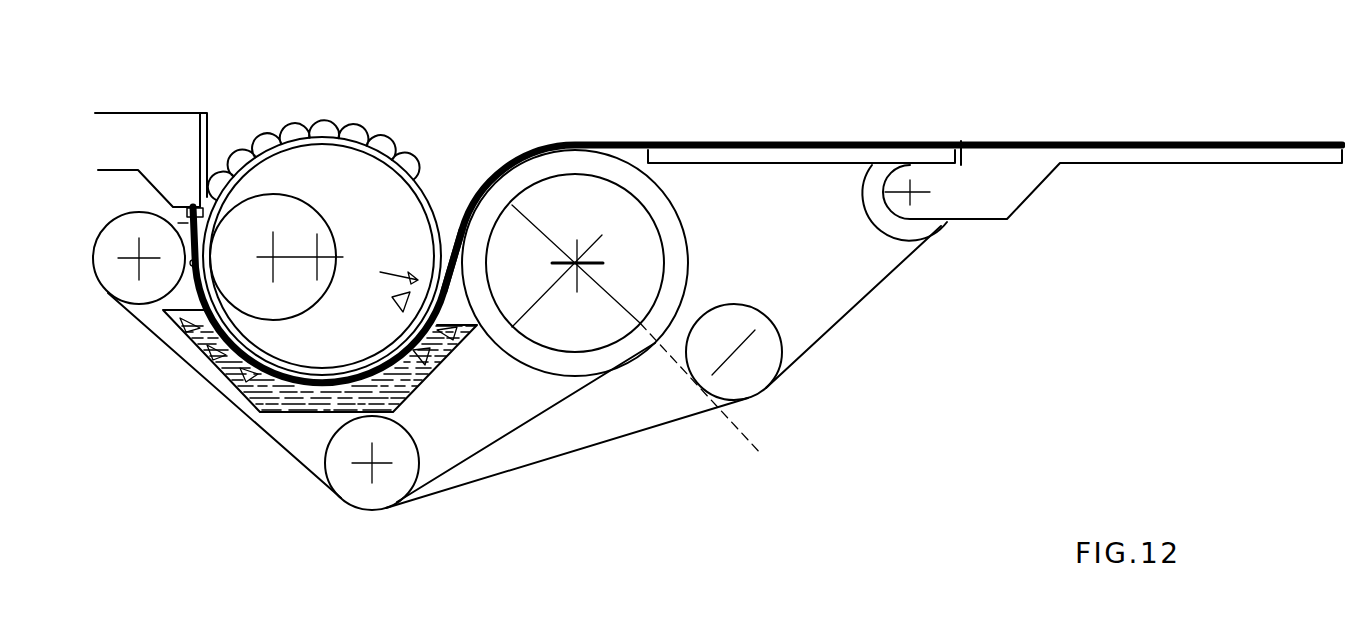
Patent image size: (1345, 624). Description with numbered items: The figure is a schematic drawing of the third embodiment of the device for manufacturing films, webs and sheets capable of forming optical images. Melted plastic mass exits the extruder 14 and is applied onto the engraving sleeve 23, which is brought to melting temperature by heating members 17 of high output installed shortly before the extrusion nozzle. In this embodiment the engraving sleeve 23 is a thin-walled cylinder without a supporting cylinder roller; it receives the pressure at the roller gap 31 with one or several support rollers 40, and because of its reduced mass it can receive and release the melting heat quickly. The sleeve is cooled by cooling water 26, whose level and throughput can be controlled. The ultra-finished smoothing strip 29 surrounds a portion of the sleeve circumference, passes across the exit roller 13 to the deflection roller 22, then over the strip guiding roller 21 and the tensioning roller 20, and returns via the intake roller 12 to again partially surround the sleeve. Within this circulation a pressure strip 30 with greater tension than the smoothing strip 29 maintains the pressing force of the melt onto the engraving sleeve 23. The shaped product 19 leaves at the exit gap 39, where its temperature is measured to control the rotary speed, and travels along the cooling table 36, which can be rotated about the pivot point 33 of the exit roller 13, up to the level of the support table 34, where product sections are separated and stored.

The intake roller 12 is at (104, 282).
The exit roller 13 is at (633, 281).
The extruder 14 is at (137, 124).
The heating member 17 is at (310, 130).
The product 19 is at (595, 140).
The tensioning roller 20 is at (383, 485).
The strip guiding roller 21 is at (750, 378).
The deflection roller 22 is at (882, 217).
The engraving sleeve 23 is at (421, 193).
The cooling water 26 is at (245, 397).
The smoothing strip 29 is at (872, 300).
The pressure strip 30 is at (513, 368).
The roller gap 31 is at (185, 254).
The pivot point 33 is at (577, 261).
The support table 34 is at (1158, 158).
The cooling table 36 is at (803, 150).
The exit gap 39 is at (447, 252).
The support roller 40 is at (243, 287).